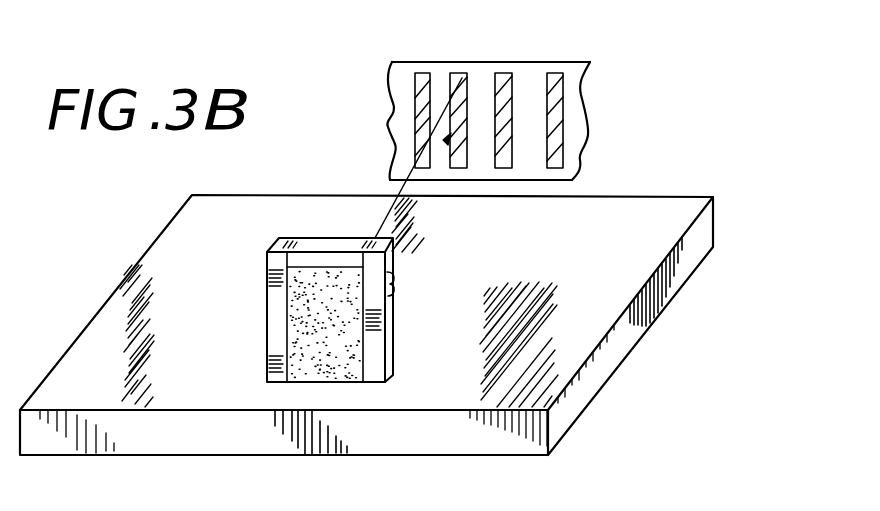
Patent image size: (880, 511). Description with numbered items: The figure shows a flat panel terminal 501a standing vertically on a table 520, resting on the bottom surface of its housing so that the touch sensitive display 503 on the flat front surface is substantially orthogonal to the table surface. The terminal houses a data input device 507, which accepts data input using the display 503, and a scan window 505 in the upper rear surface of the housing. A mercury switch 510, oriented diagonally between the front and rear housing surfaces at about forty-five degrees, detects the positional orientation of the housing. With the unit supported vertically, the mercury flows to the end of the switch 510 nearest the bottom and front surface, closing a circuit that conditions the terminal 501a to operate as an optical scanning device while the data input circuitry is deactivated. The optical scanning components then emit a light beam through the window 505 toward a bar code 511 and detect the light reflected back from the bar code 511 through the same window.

The table 520 is at (695, 196).
The terminal 501a is at (412, 228).
The touch sensitive display 503 is at (286, 325).
The scan window 505 is at (342, 240).
The data input device 507 is at (350, 348).
The mercury switch 510 is at (400, 308).
The bar code 511 is at (563, 100).